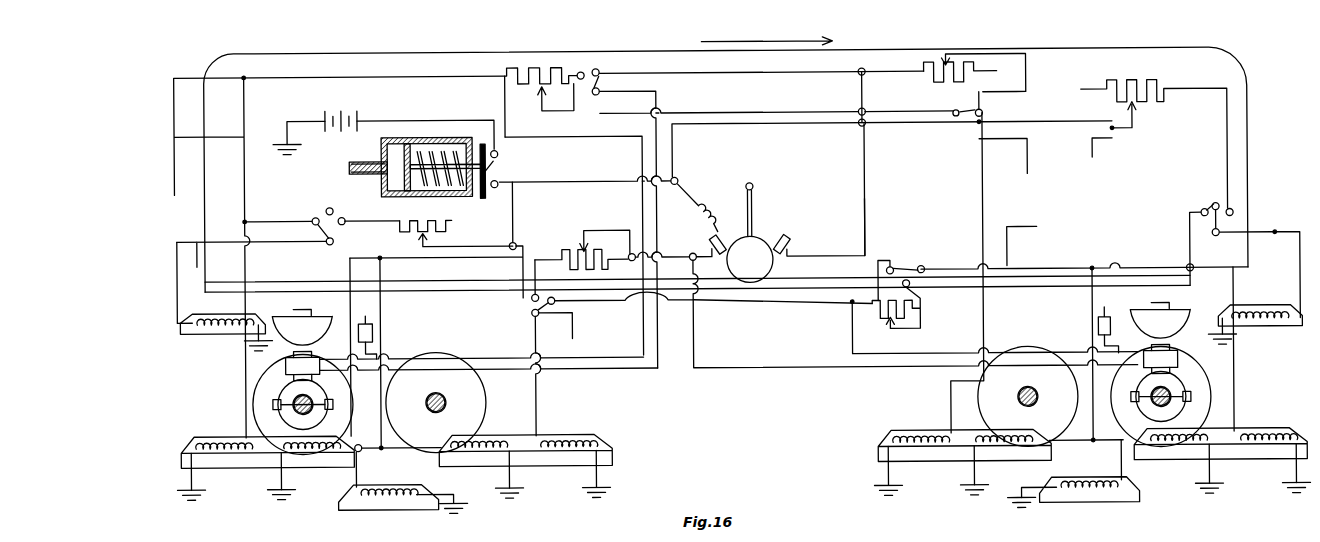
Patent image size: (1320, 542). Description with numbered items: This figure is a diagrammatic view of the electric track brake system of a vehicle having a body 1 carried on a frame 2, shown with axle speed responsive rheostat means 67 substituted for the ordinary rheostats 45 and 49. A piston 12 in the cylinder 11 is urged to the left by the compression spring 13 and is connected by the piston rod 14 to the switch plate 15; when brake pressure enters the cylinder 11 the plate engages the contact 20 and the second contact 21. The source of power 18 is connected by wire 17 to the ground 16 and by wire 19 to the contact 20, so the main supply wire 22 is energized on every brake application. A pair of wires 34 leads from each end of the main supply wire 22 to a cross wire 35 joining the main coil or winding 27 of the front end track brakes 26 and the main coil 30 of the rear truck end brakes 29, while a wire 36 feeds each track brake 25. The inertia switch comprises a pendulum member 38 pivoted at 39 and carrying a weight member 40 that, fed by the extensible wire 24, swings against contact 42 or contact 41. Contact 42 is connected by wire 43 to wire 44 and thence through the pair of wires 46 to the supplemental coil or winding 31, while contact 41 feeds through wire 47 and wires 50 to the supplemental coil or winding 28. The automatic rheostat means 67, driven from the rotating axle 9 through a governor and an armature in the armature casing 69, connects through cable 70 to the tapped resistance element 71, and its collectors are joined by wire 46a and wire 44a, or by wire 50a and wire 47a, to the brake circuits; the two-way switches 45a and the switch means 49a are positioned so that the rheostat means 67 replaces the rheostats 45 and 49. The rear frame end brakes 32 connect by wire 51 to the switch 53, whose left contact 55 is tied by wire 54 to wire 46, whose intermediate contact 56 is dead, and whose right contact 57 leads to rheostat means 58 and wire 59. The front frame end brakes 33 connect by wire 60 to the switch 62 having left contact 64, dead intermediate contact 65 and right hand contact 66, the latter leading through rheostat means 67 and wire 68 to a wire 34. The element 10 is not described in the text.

The body 1 is at (1249, 152).
The frame 2 is at (460, 288).
The rotating axle 9 is at (292, 400).
The motor 10 is at (275, 378).
The cylinder 11 is at (382, 159).
The piston 12 is at (408, 141).
The compression spring 13 is at (460, 142).
The piston rod 14 is at (486, 198).
The switch plate 15 is at (506, 163).
The ground 16 is at (302, 156).
The wire 17 is at (293, 118).
The source of power 18 is at (336, 108).
The wire 19 is at (458, 118).
The contact 20 is at (499, 153).
The second contact 21 is at (499, 182).
The main supply wire 22 is at (588, 180).
The extensible wire 24 is at (704, 200).
The track brakes 25 is at (340, 508).
The front end track brakes 26 is at (600, 440).
The main coil or winding 27 is at (462, 462).
The supplemental coil or winding 28 is at (562, 462).
The rear truck end brakes 29 is at (190, 438).
The main coil 30 is at (318, 456).
The supplemental coil or winding 31 is at (214, 440).
The rear frame end brakes 32 is at (196, 336).
The front frame end brakes 33 is at (1270, 332).
The wires 34 is at (522, 268).
The cross wire 35 is at (390, 452).
The wire 36 is at (349, 268).
The pendulum member 38 is at (754, 206).
The pivot 39 is at (750, 182).
The weight member 40 is at (760, 240).
The contact 41 is at (709, 244).
The contact 42 is at (790, 244).
The wire 43 is at (866, 216).
The wire 44 is at (760, 78).
The wire 44a is at (660, 106).
The rheostat means 45 is at (531, 56).
The two-way switch 45a is at (593, 56).
The wires 46 is at (232, 134).
The wire 46a is at (336, 376).
The wire 47 is at (622, 228).
The wire 47a is at (797, 371).
The rheostat means 49 is at (570, 250).
The switch means 49a is at (528, 300).
The wires 50 is at (572, 339).
The wire 50a is at (802, 315).
The wire 51 is at (196, 252).
The switch 53 is at (321, 213).
The wire 54 is at (262, 218).
The left contact 55 is at (312, 217).
The intermediate contact 56 is at (336, 202).
The right contact 57 is at (346, 219).
The rheostat means 58 is at (446, 220).
The wire 59 is at (492, 248).
The wire 60 is at (1275, 238).
The switch 62 is at (1206, 204).
The left contact 64 is at (1201, 212).
The intermediate contact 65 is at (1217, 205).
The right hand contact 66 is at (1234, 216).
The rheostat means 67 is at (314, 336).
The wire 68 is at (1124, 139).
The armature casing 69 is at (732, 361).
The cable 70 is at (378, 352).
The tapped resistance element 71 is at (735, 315).